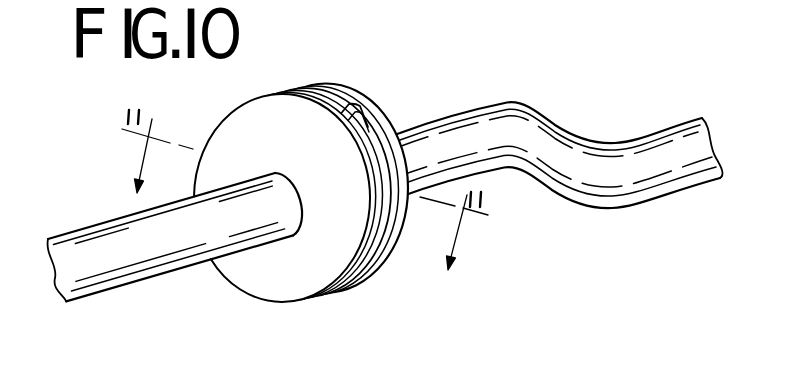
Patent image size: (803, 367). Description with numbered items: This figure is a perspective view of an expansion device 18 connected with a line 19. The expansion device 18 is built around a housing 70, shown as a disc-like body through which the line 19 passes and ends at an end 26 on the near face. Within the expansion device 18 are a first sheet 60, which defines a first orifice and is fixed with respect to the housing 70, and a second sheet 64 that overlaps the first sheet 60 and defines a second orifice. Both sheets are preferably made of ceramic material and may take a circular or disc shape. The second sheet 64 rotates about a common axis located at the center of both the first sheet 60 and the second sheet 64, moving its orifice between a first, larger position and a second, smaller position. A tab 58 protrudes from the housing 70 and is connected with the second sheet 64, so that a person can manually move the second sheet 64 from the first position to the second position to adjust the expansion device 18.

The expansion device 18 is at (316, 176).
The tubular member 19 is at (385, 188).
The tube end 26 is at (303, 214).
The tab 58 is at (352, 103).
The first sheet 60 is at (384, 138).
The second sheet 64 is at (288, 93).
The housing 70 is at (343, 182).